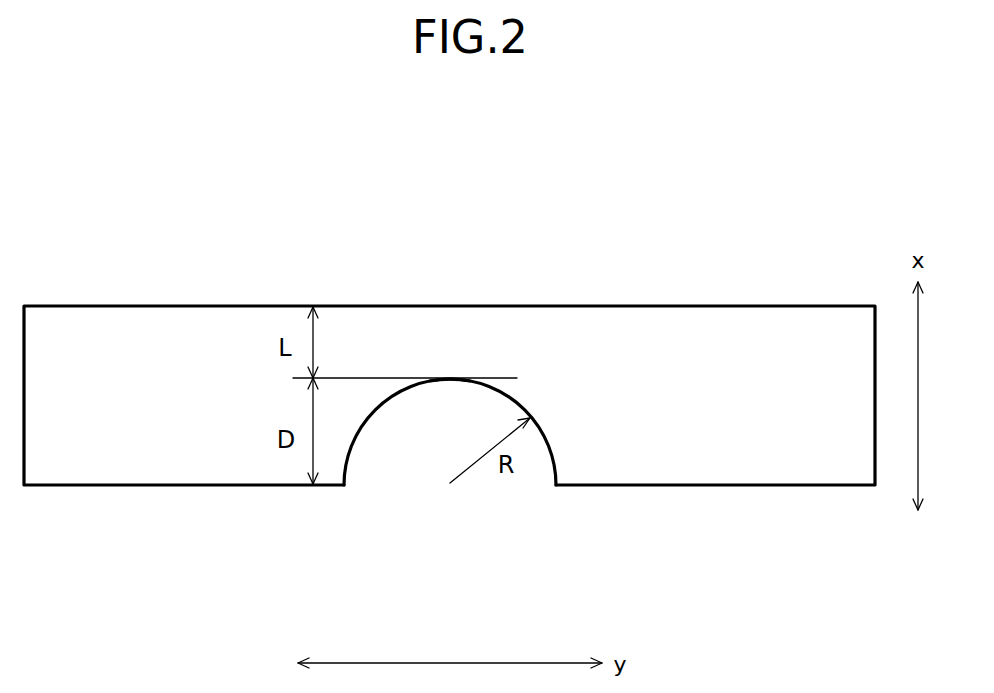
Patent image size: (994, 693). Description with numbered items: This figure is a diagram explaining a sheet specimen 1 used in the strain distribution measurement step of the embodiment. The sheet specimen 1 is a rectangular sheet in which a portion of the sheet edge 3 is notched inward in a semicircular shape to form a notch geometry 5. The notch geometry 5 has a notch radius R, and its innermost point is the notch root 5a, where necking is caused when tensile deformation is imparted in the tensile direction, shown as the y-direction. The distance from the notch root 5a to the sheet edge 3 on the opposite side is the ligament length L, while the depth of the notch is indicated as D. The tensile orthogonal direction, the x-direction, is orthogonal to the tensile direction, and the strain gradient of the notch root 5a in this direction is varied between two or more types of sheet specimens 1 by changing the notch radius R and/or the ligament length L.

The sheet specimen 1 is at (449, 345).
The sheet edge 3 is at (215, 486).
The notch geometry 5 is at (415, 470).
The notch root 5a is at (450, 376).